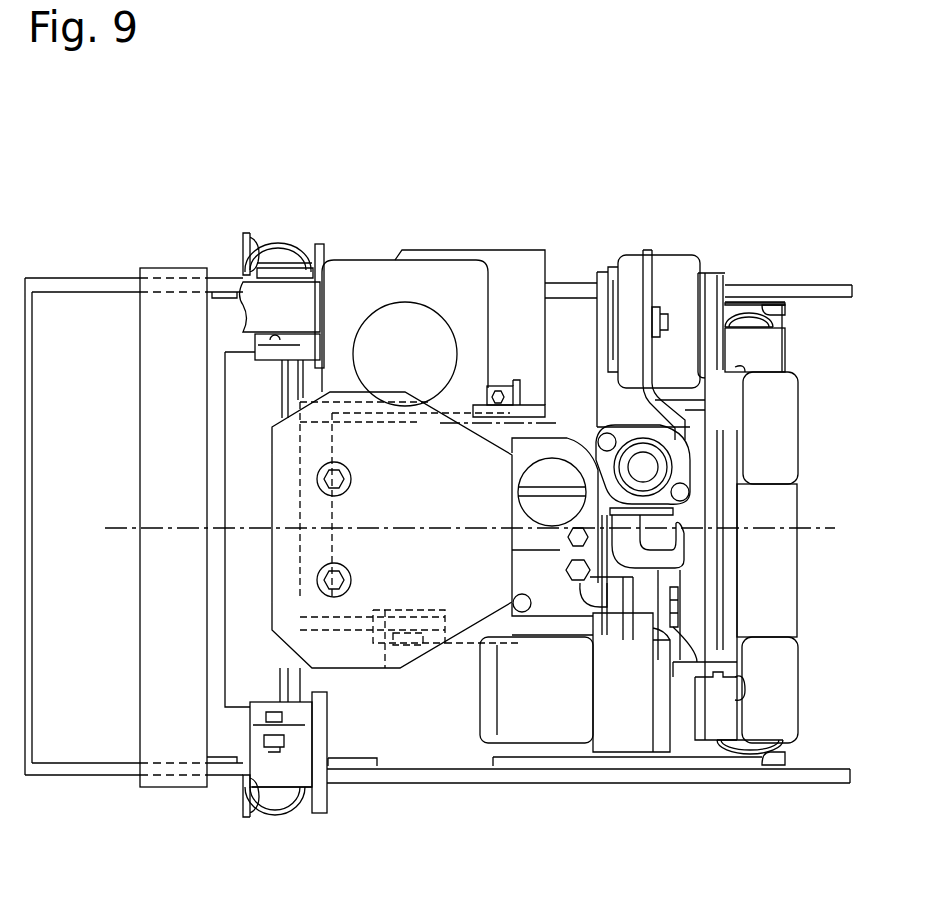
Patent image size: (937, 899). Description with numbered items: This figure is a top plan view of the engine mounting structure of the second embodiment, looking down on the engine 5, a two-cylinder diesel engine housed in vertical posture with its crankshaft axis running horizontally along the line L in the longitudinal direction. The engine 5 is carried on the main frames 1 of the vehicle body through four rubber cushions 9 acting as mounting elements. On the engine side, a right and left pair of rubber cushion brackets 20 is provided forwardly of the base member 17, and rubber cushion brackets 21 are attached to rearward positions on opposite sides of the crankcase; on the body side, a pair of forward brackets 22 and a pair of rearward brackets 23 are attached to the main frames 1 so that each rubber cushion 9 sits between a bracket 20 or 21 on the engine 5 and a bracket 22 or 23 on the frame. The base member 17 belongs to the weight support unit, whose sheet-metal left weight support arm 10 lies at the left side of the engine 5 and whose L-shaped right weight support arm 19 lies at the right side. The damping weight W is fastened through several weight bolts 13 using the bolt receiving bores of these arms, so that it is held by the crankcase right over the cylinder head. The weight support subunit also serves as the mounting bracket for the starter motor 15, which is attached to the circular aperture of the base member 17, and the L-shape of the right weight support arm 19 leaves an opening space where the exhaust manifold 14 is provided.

The main frame 1 is at (106, 290).
The engine 5 is at (667, 234).
The rubber cushion 9 is at (275, 256).
The left weight support arm 10 is at (388, 668).
The weight bolt 13 is at (351, 479).
The exhaust manifold 14 is at (353, 286).
The starter motor 15 is at (538, 284).
The base member 17 is at (327, 705).
The right weight support arm 19 is at (530, 406).
The rubber cushion bracket 20 is at (297, 775).
The rubber cushion bracket 21 is at (778, 352).
The forward bracket 22 is at (244, 242).
The rearward bracket 23 is at (787, 305).
The center line L is at (108, 528).
The damping weight W is at (272, 612).